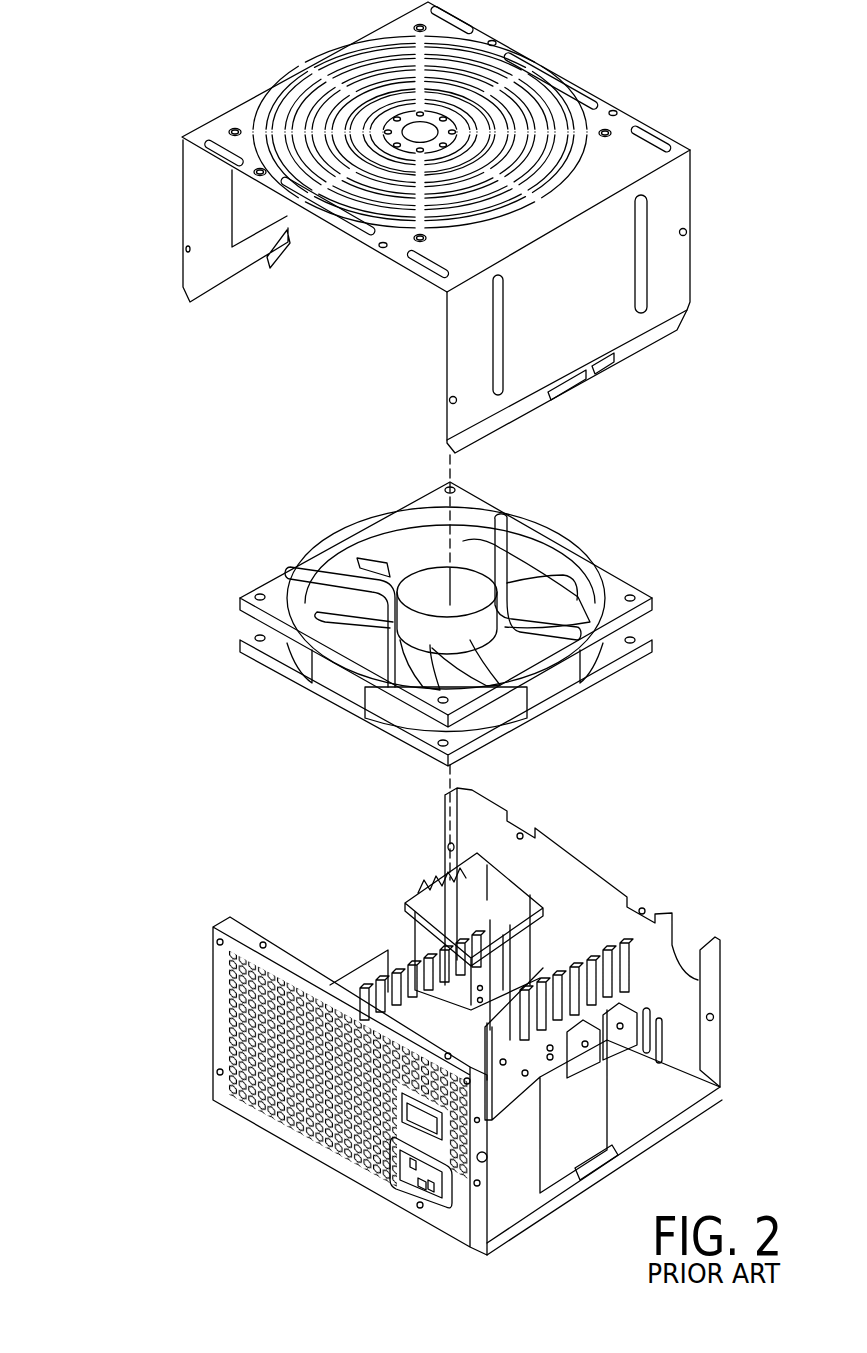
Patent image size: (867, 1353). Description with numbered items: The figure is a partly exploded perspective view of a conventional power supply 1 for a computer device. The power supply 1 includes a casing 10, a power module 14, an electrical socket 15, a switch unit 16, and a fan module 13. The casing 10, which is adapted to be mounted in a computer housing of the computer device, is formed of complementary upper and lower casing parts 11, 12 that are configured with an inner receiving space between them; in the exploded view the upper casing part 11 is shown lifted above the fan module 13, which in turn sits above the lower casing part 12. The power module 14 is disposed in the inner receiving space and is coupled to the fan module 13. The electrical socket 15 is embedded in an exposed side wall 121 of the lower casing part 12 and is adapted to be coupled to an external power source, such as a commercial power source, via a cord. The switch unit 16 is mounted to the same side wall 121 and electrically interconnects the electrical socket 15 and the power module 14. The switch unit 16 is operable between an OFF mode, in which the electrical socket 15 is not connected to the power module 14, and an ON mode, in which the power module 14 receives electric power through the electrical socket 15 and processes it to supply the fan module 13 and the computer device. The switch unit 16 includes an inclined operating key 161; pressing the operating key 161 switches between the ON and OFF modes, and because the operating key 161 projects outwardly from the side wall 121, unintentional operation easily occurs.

The power supply 1 is at (762, 122).
The casing 10 is at (108, 892).
The upper casing part 11 is at (172, 267).
The lower casing part 12 is at (207, 1003).
The fan module 13 is at (470, 593).
The power module 14 is at (560, 927).
The electrical socket 15 is at (433, 1187).
The switch unit 16 is at (448, 1138).
The side wall 121 is at (260, 1113).
The operating key 161 is at (407, 1115).